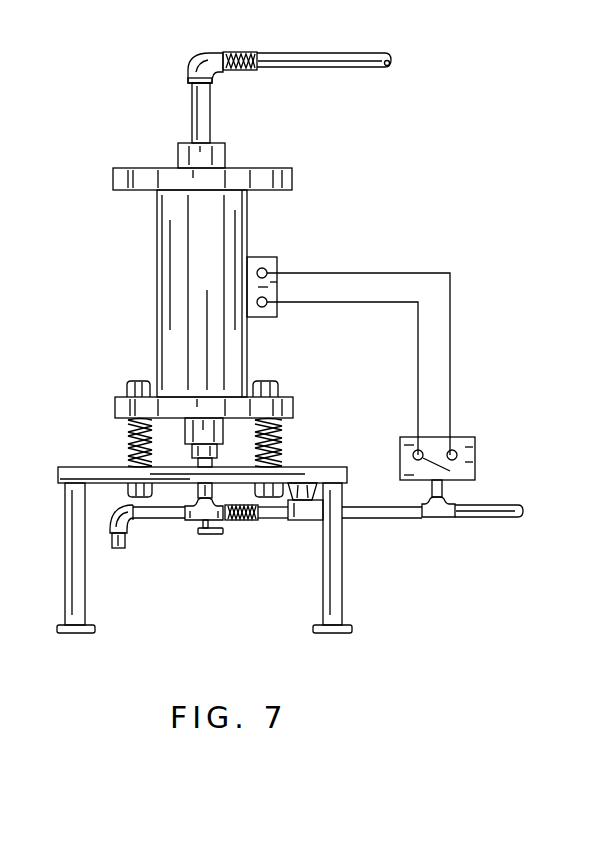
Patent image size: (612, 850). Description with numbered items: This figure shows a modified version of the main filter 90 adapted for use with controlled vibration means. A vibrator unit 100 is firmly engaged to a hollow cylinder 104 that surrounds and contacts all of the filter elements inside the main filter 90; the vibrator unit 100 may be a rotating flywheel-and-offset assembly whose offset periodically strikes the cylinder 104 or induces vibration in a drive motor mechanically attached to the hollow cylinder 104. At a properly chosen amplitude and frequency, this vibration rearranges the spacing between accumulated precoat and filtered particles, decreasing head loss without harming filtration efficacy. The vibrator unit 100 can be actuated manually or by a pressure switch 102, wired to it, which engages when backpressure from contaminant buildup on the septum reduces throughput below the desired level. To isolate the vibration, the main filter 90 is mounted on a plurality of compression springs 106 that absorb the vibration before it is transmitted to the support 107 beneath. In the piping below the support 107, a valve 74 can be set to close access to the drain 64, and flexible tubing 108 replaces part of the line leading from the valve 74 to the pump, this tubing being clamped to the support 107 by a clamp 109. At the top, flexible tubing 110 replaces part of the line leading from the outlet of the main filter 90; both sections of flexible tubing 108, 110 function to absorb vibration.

The main filter 90 is at (264, 260).
The hollow cylinder 104 is at (160, 232).
The vibrator unit 100 is at (277, 262).
The flexible tubing 110 is at (243, 52).
The compression springs 106 is at (126, 447).
The support 107 is at (65, 557).
The valve 74 is at (192, 527).
The drain 64 is at (117, 548).
The flexible tubing 108 is at (243, 521).
The clamp 109 is at (300, 520).
The pressure switch 102 is at (477, 458).